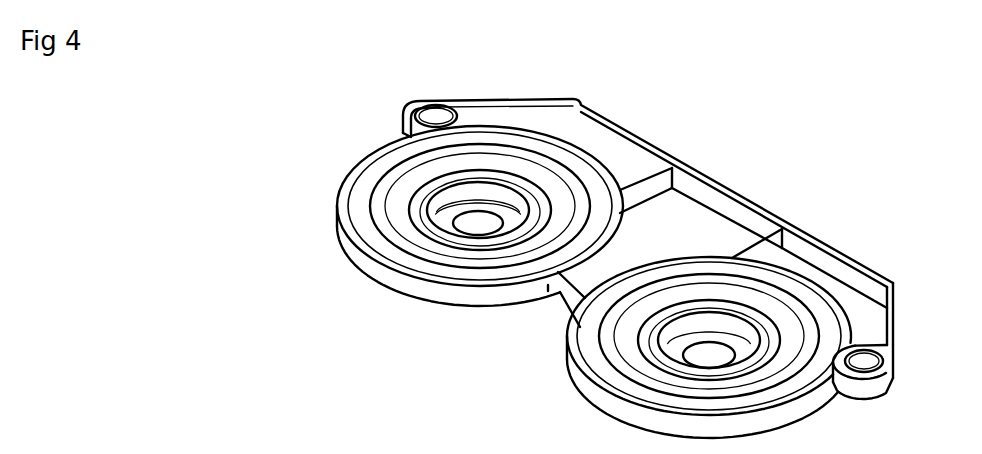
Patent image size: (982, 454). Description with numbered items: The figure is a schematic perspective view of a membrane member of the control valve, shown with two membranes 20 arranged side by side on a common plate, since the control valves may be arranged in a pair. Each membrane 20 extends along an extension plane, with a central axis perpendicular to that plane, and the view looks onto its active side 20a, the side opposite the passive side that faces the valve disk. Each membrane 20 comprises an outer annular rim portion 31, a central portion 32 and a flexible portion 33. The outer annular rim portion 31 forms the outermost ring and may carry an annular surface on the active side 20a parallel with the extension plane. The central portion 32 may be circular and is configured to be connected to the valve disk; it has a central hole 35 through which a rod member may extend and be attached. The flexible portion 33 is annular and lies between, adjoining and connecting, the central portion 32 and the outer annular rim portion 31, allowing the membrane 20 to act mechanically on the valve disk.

The membrane 20 is at (372, 136).
The active side 20a is at (457, 156).
The outer annular rim portion 31 is at (365, 175).
The central portion 32 is at (430, 213).
The flexible portion 33 is at (402, 198).
The central hole 35 is at (482, 222).